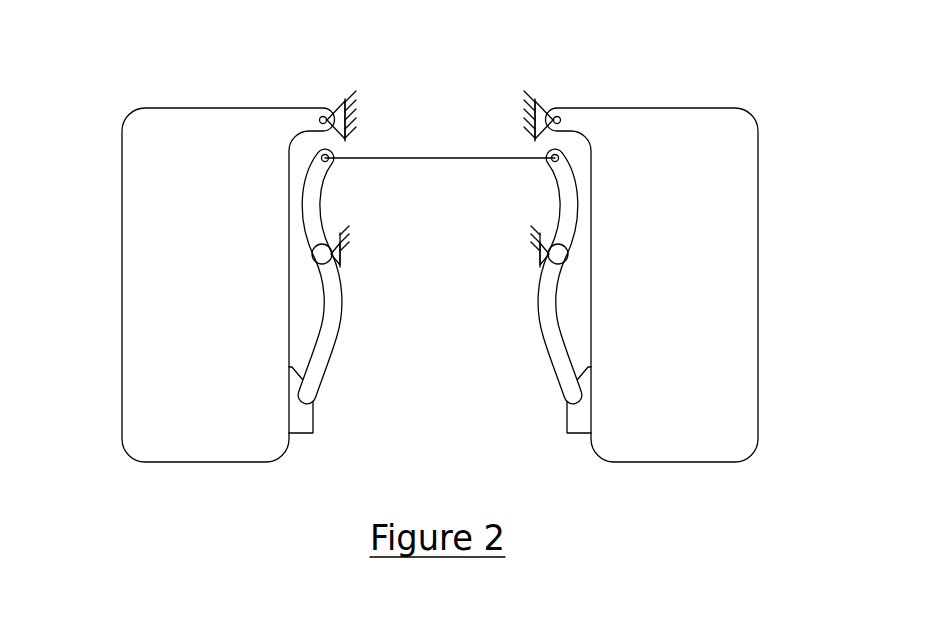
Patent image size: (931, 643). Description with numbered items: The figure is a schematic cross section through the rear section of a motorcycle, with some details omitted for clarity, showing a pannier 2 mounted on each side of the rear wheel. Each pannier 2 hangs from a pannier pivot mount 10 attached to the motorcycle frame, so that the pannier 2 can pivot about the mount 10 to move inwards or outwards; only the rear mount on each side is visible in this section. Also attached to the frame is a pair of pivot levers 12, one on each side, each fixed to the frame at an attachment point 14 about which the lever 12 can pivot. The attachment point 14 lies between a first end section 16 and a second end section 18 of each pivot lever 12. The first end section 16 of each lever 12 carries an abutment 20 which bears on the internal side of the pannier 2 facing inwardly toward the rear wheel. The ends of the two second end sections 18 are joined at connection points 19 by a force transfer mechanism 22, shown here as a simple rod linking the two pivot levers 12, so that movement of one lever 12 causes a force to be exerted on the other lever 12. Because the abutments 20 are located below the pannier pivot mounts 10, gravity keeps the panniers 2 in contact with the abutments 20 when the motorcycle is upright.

The pannier 2 is at (122, 286).
The pannier pivot mount 10 is at (558, 117).
The pivot lever 12 is at (533, 348).
The attachment point 14 is at (539, 253).
The first end section 16 is at (328, 358).
The second end section 18 is at (313, 204).
The connection point 19 is at (550, 163).
The abutment 20 is at (303, 427).
The force transfer mechanism 22 is at (428, 155).